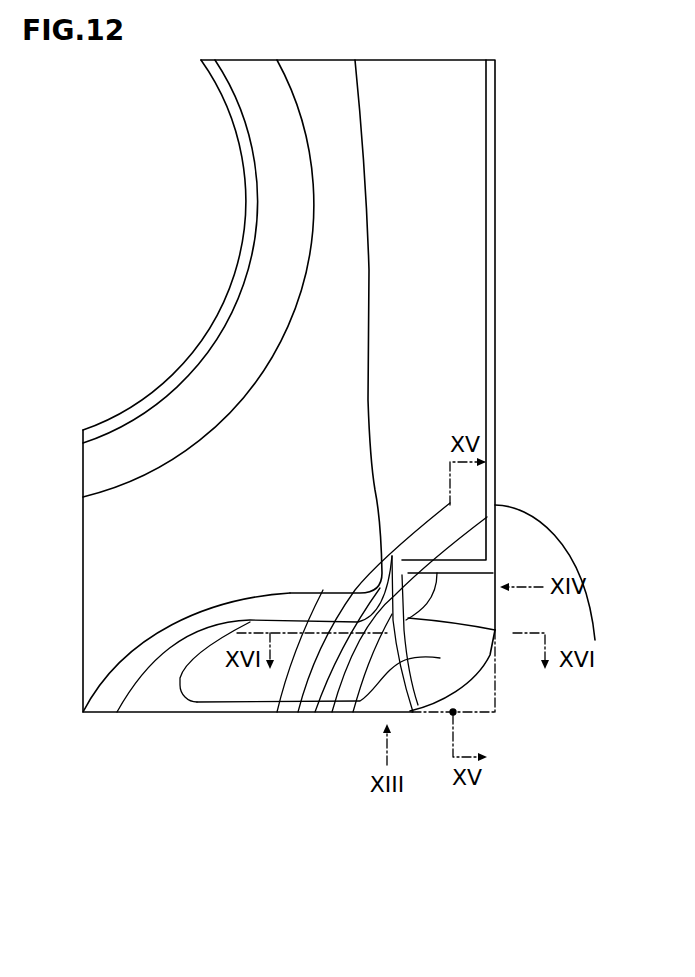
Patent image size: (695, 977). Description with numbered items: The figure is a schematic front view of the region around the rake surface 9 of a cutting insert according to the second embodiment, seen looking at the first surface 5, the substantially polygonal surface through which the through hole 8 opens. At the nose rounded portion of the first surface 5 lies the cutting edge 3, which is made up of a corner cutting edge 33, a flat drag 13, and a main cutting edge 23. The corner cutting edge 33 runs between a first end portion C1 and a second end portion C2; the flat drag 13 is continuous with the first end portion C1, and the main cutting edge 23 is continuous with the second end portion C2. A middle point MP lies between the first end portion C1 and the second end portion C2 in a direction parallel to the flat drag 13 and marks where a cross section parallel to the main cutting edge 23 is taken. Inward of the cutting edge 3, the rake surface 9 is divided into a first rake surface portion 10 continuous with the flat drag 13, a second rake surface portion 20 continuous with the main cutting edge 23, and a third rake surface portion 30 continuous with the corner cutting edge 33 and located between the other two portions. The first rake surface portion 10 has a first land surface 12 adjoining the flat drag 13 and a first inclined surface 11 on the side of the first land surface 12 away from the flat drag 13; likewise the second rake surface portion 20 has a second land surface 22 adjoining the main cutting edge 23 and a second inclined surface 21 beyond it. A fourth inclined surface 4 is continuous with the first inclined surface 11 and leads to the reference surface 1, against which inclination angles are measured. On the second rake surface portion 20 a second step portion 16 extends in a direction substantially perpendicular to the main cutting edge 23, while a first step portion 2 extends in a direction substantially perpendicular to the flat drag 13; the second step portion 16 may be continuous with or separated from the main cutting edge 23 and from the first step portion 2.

The reference surface 1 is at (203, 572).
The first step portion 2 is at (353, 712).
The cutting edge 3 is at (430, 870).
The fourth inclined surface 4 is at (137, 665).
The first surface 5 is at (297, 903).
The through hole 8 is at (177, 413).
The rake surface 9 is at (385, 870).
The first rake surface portion 10 is at (167, 838).
The first inclined surface 11 is at (287, 672).
The first land surface 12 is at (267, 703).
The flat drag 13 is at (401, 713).
The second step portion 16 is at (332, 712).
The second rake surface portion 20 is at (240, 838).
The second inclined surface 21 is at (277, 712).
The second land surface 22 is at (315, 712).
The main cutting edge 23 is at (595, 640).
The third rake surface portion 30 is at (377, 712).
The corner cutting edge 33 is at (467, 690).
The first end portion C1 is at (411, 713).
The second end portion C2 is at (494, 636).
The middle point MP is at (453, 712).